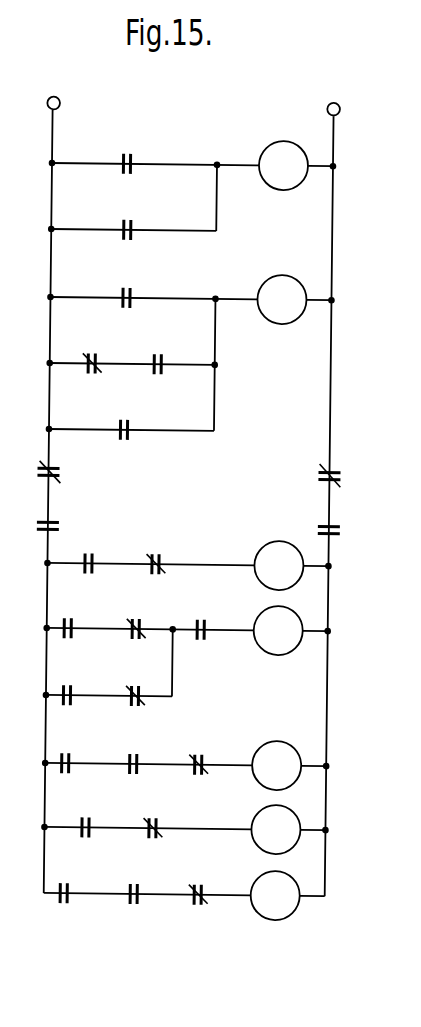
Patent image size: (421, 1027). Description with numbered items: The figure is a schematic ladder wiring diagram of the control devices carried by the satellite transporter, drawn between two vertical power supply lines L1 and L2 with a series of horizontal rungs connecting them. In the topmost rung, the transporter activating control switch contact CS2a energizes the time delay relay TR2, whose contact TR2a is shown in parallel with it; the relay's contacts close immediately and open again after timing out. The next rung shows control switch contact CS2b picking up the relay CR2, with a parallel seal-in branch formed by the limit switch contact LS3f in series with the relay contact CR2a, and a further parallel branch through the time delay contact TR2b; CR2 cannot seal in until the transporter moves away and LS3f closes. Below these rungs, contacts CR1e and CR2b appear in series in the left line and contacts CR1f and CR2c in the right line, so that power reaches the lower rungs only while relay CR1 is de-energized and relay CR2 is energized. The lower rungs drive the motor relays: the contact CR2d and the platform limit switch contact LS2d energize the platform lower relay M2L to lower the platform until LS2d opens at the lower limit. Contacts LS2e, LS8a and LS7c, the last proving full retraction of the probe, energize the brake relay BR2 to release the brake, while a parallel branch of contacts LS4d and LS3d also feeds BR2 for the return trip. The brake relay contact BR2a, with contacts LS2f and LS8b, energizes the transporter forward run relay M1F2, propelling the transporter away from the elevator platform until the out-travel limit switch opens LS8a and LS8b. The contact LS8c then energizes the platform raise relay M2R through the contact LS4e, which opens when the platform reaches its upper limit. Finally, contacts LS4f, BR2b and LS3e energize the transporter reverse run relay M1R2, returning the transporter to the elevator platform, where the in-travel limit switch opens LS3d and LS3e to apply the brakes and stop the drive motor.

The power supply line L1 is at (55, 92).
The power supply line L2 is at (333, 98).
The transporter activating control switch contact CS2a is at (136, 154).
The time delay relay TR2 is at (284, 166).
The time delay relay contact TR2a is at (133, 221).
The transporter activating control switch contact CS2b is at (131, 289).
The control relay CR2 is at (282, 300).
The transporter in-travel limit switch contact LS3f is at (92, 352).
The control relay contact CR2a is at (171, 353).
The time delay relay contact TR2b is at (125, 420).
The control relay contact CR1e is at (78, 471).
The control relay contact CR1f is at (309, 468).
The control relay contact CR2b is at (78, 518).
The control relay contact CR2c is at (308, 517).
The control relay contact CR2d is at (113, 554).
The platform limit switch contact LS2d is at (179, 552).
The platform lower relay M2L is at (279, 566).
The platform limit switch contact LS2e is at (75, 620).
The transporter out-travel limit switch contact LS8a is at (140, 621).
The probe limit switch contact LS7c is at (210, 622).
The brake relay BR2 is at (278, 631).
The platform travel upper limit switch contact LS4d is at (76, 686).
The transporter in-travel limit switch contact LS3d is at (143, 687).
The brake relay contact BR2a is at (76, 754).
The platform limit switch contact LS2f is at (135, 755).
The transporter out-travel limit switch contact LS8b is at (200, 755).
The transporter forward run relay M1F2 is at (276, 766).
The transporter out-travel limit switch contact LS8c is at (84, 818).
The platform travel upper limit switch contact LS4e is at (156, 819).
The platform raise relay M2R is at (276, 830).
The platform travel upper limit switch contact LS4f is at (73, 883).
The brake relay contact BR2b is at (139, 884).
The transporter in-travel limit switch contact LS3e is at (207, 885).
The transporter reverse run relay M1R2 is at (275, 896).